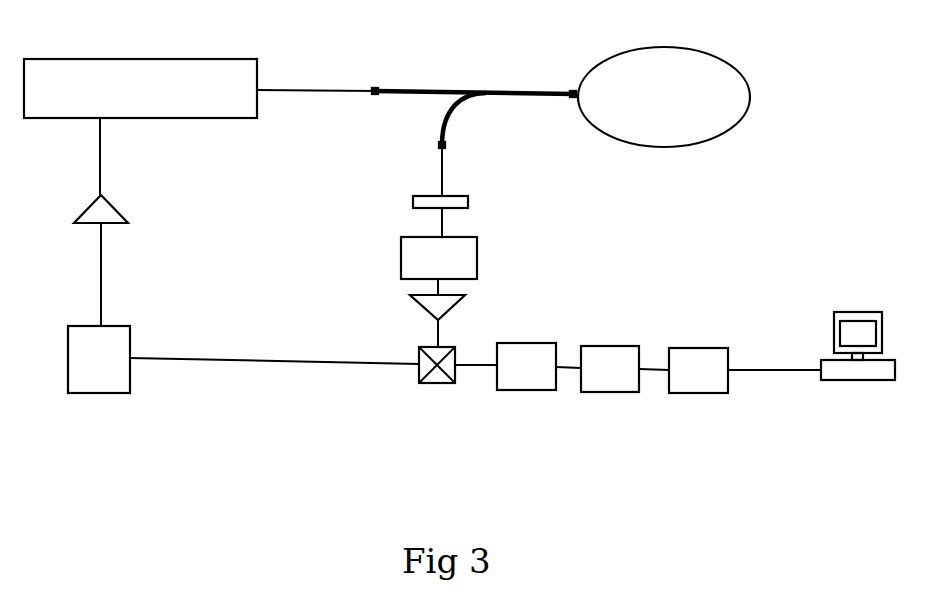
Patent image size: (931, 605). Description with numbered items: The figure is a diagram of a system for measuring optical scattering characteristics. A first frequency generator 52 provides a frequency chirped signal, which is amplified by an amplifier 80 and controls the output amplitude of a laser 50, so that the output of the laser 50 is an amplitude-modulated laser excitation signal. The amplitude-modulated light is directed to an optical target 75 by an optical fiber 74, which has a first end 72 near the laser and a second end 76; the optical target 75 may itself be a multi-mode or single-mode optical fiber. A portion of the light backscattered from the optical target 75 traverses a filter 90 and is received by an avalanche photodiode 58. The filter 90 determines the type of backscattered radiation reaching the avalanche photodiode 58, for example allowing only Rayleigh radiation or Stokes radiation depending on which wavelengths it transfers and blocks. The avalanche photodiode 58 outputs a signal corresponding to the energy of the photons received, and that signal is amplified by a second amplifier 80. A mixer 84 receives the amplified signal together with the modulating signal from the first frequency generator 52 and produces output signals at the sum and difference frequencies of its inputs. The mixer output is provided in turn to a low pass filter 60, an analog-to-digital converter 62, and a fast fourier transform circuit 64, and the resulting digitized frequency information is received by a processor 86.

The laser 50 is at (140, 88).
The first frequency generator 52 is at (99, 359).
The avalanche photodiode 58 is at (439, 258).
The low pass filter 60 is at (526, 366).
The analog-to-digital converter 62 is at (610, 369).
The fast fourier transform circuit 64 is at (698, 370).
The first end 72 is at (380, 85).
The optical fiber 74 is at (503, 87).
The optical target 75 is at (737, 63).
The second end 76 is at (447, 143).
The amplifier 80 is at (112, 205).
The mixer 84 is at (443, 382).
The processor 86 is at (835, 323).
The filter 90 is at (412, 197).